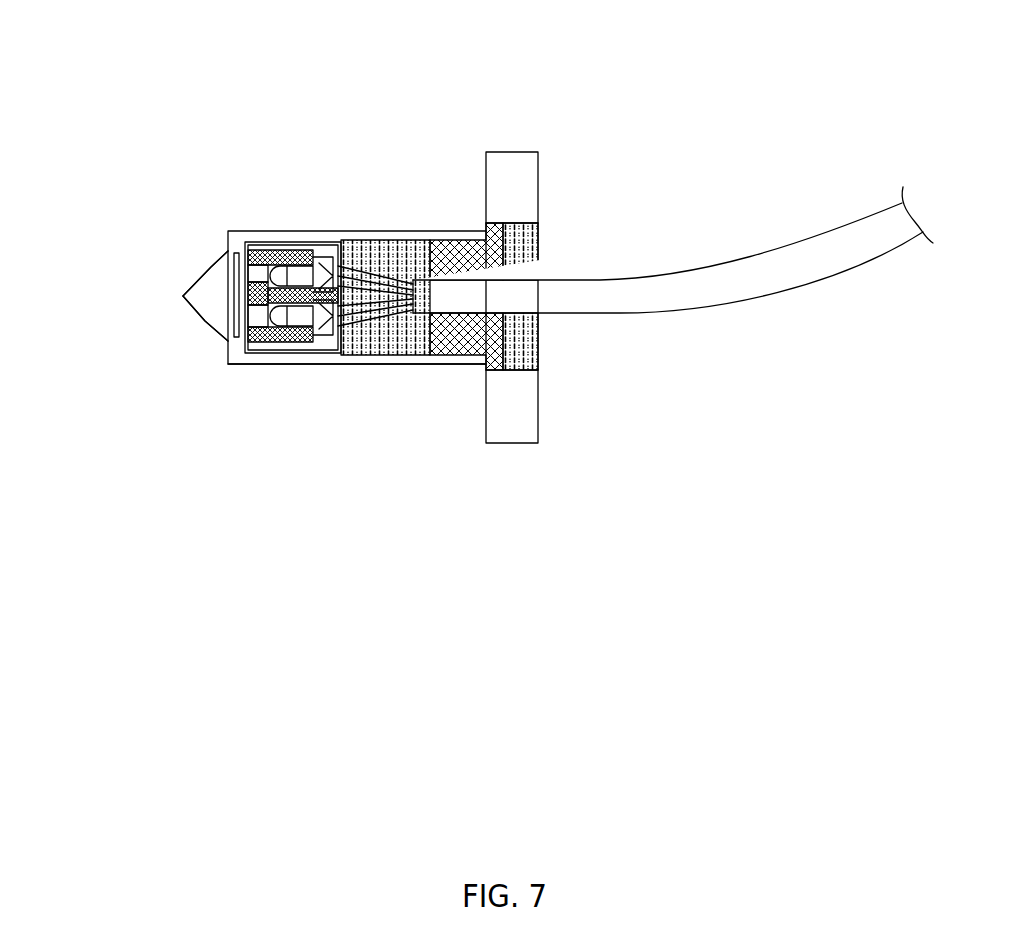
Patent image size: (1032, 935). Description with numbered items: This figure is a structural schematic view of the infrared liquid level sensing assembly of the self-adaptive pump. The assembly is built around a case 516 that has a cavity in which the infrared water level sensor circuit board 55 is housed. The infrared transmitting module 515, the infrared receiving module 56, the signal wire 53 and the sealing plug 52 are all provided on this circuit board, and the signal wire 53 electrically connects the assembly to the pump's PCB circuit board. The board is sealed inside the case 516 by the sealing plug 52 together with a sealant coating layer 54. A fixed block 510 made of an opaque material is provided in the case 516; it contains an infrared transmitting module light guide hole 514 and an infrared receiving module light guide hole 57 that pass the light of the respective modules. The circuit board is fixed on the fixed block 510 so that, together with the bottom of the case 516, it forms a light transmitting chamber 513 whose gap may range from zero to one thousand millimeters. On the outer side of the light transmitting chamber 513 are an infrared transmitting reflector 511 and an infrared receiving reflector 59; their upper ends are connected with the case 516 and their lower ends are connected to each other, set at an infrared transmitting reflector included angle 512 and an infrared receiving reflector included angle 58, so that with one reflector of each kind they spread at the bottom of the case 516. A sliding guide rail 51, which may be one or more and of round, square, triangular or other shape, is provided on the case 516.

The sliding guide rail 51 is at (512, 152).
The sealing plug 52 is at (503, 258).
The signal wire 53 is at (579, 315).
The sealant coating layer 54 is at (532, 356).
The infrared water level sensor circuit board 55 is at (342, 338).
The infrared receiving module 56 is at (283, 332).
The infrared receiving module light guide hole 57 is at (255, 320).
The infrared receiving reflector included angle 58 is at (229, 343).
The infrared receiving reflector 59 is at (205, 321).
The fixed block 510 is at (228, 296).
The infrared transmitting reflector 511 is at (211, 267).
The infrared transmitting reflector included angle 512 is at (231, 249).
The light transmitting chamber 513 is at (239, 277).
The infrared transmitting module light guide hole 514 is at (256, 274).
The infrared transmitting module 515 is at (283, 260).
The case 516 is at (407, 240).